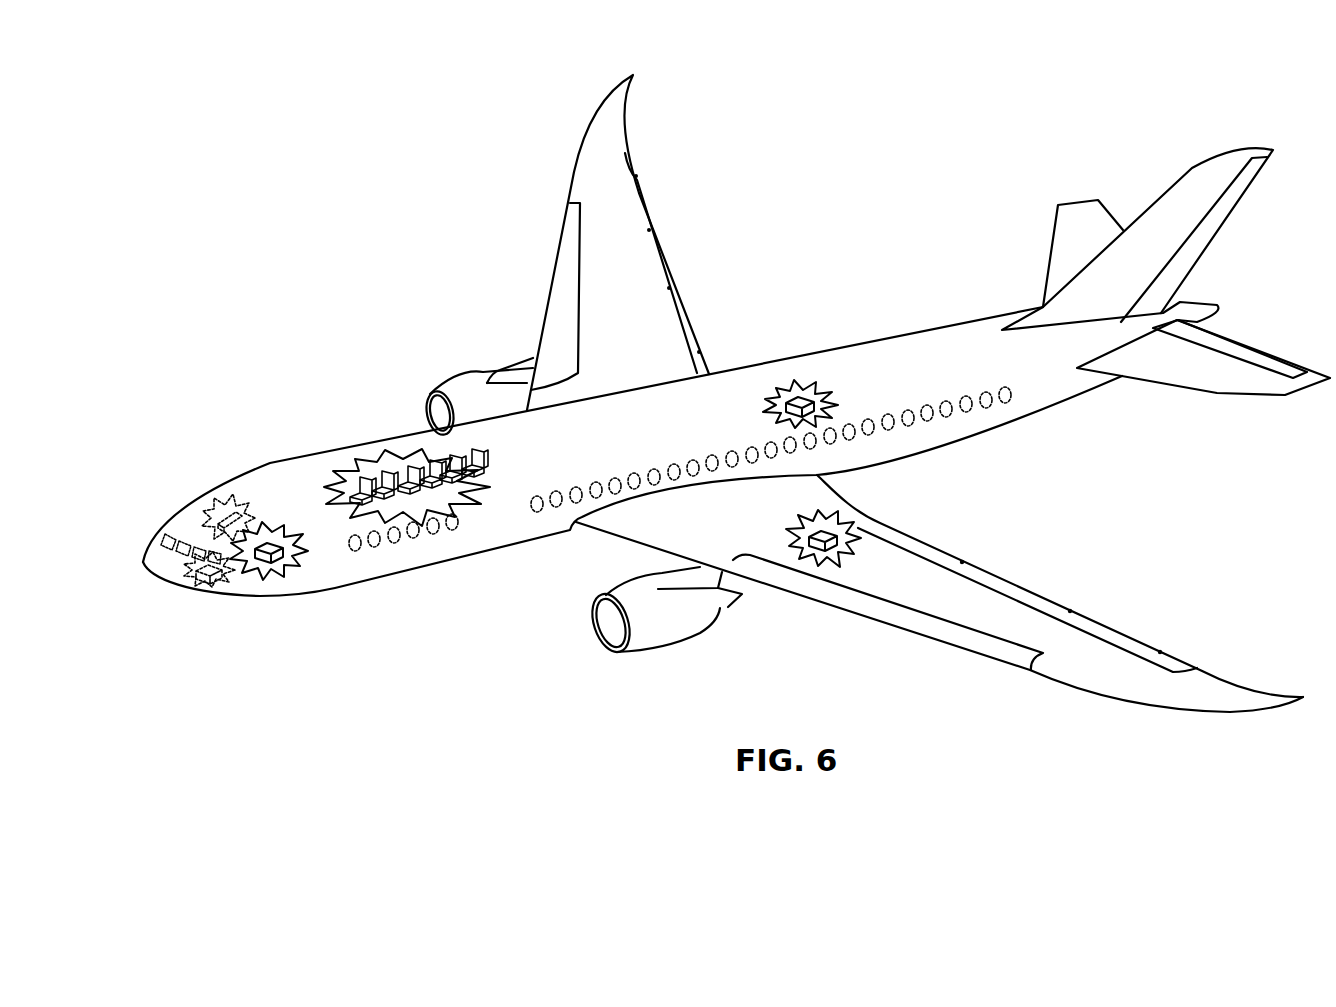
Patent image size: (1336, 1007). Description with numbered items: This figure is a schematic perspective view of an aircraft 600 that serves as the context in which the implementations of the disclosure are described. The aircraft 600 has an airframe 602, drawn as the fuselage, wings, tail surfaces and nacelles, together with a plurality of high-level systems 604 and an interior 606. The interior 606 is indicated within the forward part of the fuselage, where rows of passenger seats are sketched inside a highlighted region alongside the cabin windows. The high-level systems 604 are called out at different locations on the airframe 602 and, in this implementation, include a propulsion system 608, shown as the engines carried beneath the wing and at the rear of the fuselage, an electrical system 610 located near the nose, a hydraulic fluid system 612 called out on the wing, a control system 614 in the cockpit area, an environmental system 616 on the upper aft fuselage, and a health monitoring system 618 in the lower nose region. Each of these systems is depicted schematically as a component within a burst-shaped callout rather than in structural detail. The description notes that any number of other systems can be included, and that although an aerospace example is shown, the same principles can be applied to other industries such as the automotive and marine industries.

The aircraft 600 is at (262, 213).
The airframe 602 is at (383, 400).
The high-level systems 604 is at (255, 388).
The interior 606 is at (358, 468).
The propulsion system 608 is at (463, 385).
The electrical system 610 is at (277, 538).
The hydraulic fluid system 612 is at (826, 525).
The control system 614 is at (223, 505).
The environmental system 616 is at (803, 390).
The health monitoring system 618 is at (200, 575).